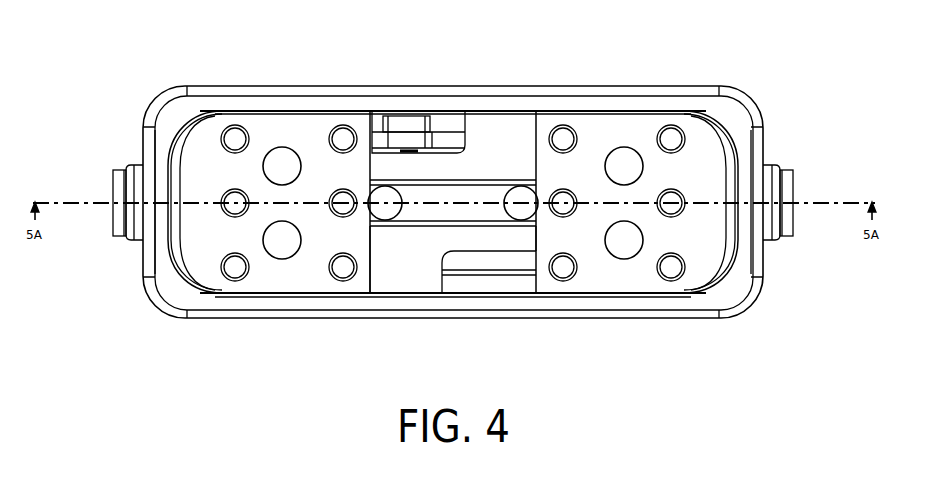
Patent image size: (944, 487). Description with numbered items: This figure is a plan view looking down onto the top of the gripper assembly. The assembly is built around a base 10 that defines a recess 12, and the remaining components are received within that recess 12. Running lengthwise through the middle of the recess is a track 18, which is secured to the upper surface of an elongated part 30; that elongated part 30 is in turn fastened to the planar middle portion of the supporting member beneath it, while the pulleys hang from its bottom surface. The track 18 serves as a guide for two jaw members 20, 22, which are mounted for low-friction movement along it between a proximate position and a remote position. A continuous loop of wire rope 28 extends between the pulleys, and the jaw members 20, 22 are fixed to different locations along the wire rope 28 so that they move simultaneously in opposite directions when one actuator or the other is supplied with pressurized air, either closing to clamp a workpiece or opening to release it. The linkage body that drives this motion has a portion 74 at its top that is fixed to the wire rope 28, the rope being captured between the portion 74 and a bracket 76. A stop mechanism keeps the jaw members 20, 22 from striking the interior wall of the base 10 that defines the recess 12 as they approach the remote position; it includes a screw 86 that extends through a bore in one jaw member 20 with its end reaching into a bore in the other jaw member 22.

The base 10 is at (650, 85).
The recess 12 is at (728, 126).
The track 18 is at (495, 226).
The jaw member 20 is at (265, 126).
The jaw member 22 is at (598, 125).
The wire rope 28 is at (463, 279).
The elongated part 30 is at (378, 273).
The portion 74 is at (440, 138).
The bracket 76 is at (398, 123).
The screw 86 is at (473, 190).